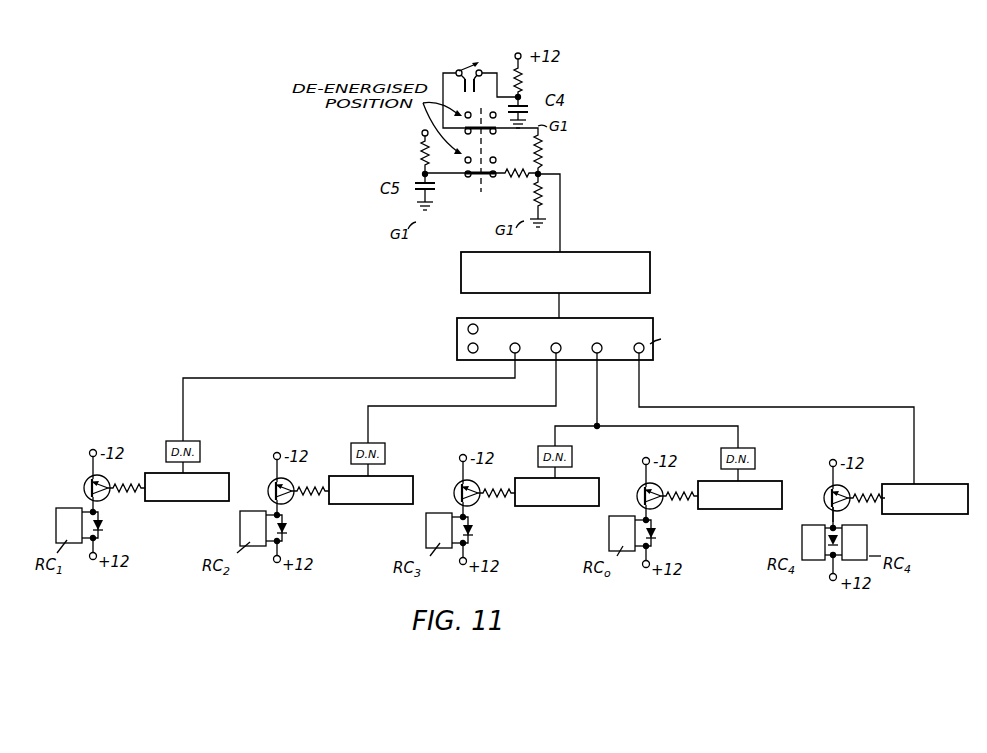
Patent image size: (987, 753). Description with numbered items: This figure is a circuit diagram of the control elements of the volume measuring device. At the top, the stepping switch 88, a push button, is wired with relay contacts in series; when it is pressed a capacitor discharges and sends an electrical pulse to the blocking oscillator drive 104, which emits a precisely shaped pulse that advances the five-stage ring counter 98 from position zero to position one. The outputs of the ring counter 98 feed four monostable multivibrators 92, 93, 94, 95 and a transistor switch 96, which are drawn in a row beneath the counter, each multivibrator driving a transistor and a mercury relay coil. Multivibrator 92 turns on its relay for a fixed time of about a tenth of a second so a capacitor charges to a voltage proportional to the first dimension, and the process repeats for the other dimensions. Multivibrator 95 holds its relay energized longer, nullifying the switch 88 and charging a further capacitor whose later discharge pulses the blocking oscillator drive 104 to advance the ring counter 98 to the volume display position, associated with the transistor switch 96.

The stepping switch 88 is at (460, 65).
The monostable multivibrator 92 is at (156, 501).
The monostable multivibrator 93 is at (356, 504).
The monostable multivibrator 94 is at (548, 506).
The monostable multivibrator 95 is at (717, 509).
The transistor switch 96 is at (922, 515).
The ring counter 98 is at (462, 329).
The blocking oscillator drive 104 is at (569, 253).